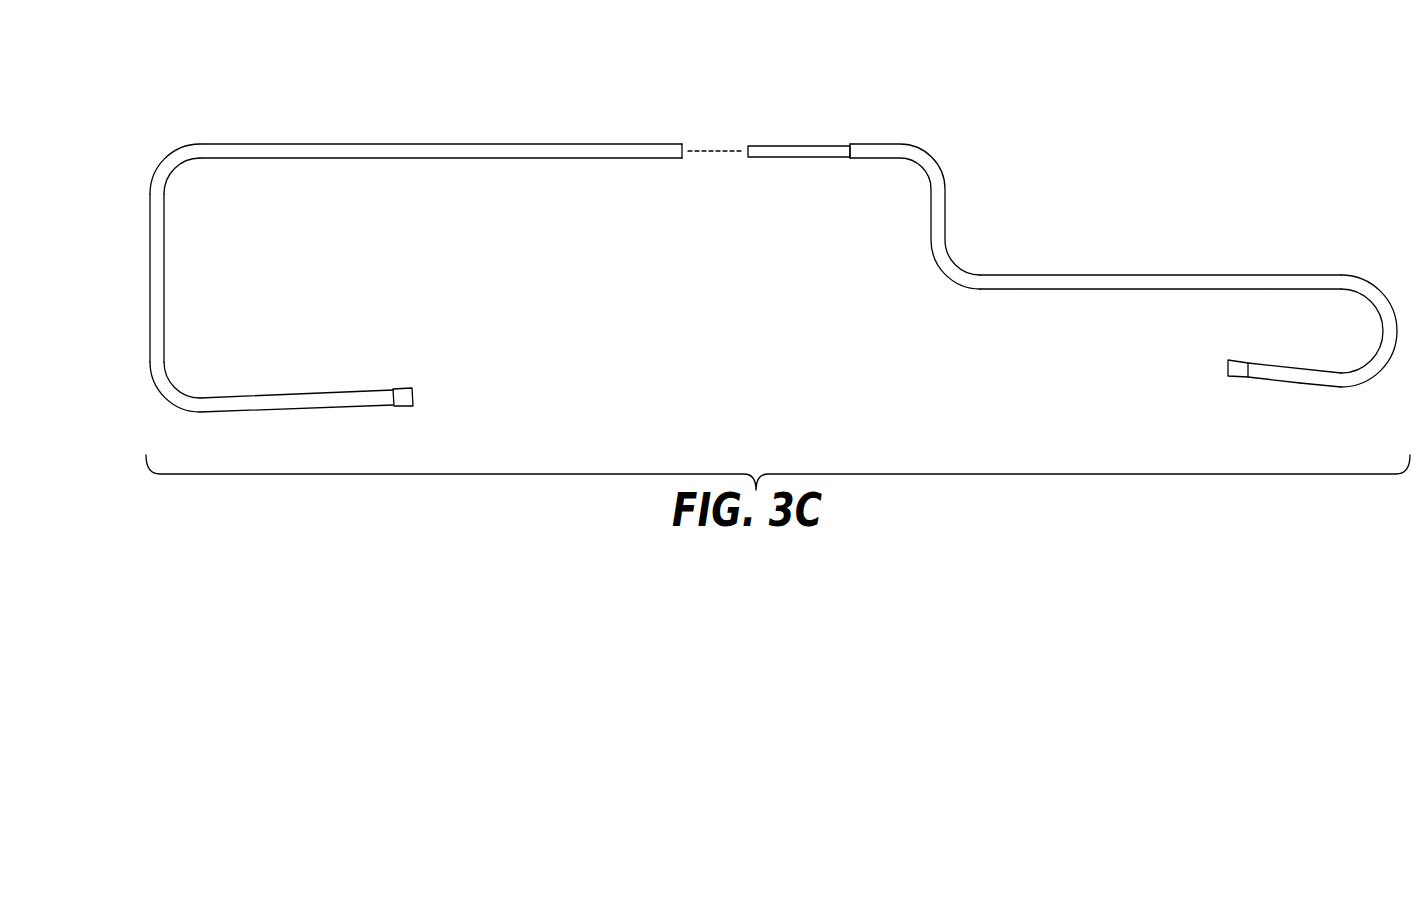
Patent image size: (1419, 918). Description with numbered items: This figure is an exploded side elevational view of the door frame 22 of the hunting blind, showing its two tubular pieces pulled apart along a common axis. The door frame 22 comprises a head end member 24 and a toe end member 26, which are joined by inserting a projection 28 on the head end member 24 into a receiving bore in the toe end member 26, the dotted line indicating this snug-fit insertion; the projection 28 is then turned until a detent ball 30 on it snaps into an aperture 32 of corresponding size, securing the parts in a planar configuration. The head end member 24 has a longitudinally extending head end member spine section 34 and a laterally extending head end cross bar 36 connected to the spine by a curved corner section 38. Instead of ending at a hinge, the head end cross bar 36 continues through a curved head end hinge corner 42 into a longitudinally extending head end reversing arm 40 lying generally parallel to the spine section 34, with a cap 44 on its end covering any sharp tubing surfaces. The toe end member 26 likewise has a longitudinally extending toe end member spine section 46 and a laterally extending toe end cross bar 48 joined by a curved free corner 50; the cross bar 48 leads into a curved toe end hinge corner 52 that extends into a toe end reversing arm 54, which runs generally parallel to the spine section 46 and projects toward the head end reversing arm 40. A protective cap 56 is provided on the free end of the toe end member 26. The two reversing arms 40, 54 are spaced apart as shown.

The door frame 22 is at (612, 57).
The head end member 24 is at (1090, 273).
The toe end member 26 is at (514, 145).
The projection 28 is at (763, 145).
The detent ball 30 is at (825, 152).
The aperture 32 is at (656, 149).
The head end member spine section 34 is at (1170, 290).
The head end cross bar 36 is at (1380, 330).
The curved corner section 38 is at (1364, 300).
The head end reversing arm 40 is at (1262, 384).
The head end hinge corner 42 is at (1375, 383).
The cap 44 is at (1238, 362).
The toe end member spine section 46 is at (405, 160).
The toe end cross bar 48 is at (165, 243).
The curved free corner 50 is at (180, 148).
The toe end hinge corner 52 is at (180, 388).
The toe end reversing arm 54 is at (320, 407).
The protective cap 56 is at (407, 406).